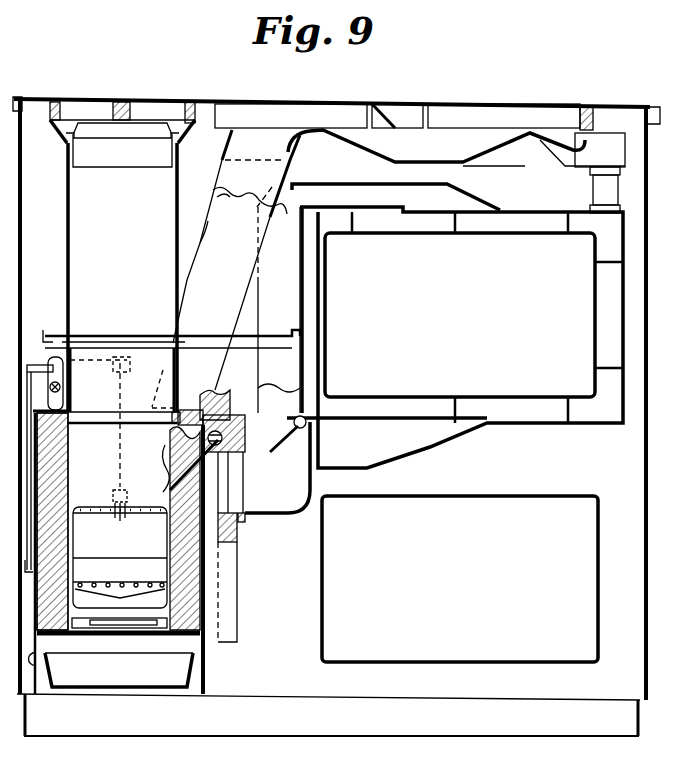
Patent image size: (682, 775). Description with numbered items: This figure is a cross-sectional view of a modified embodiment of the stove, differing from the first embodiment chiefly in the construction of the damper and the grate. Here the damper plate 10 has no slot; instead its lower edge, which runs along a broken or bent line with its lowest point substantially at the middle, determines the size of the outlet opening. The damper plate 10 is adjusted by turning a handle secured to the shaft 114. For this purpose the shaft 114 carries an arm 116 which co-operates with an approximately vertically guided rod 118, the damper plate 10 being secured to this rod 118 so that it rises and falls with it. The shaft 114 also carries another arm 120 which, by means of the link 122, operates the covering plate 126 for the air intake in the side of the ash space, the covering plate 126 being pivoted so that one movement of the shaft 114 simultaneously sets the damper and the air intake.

The damper plate 10 is at (112, 555).
The shaft 114 is at (63, 398).
The arm 116 is at (107, 362).
The rod 118 is at (120, 461).
The arm 120 is at (53, 369).
The link 122 is at (40, 468).
The covering plate 126 is at (38, 660).